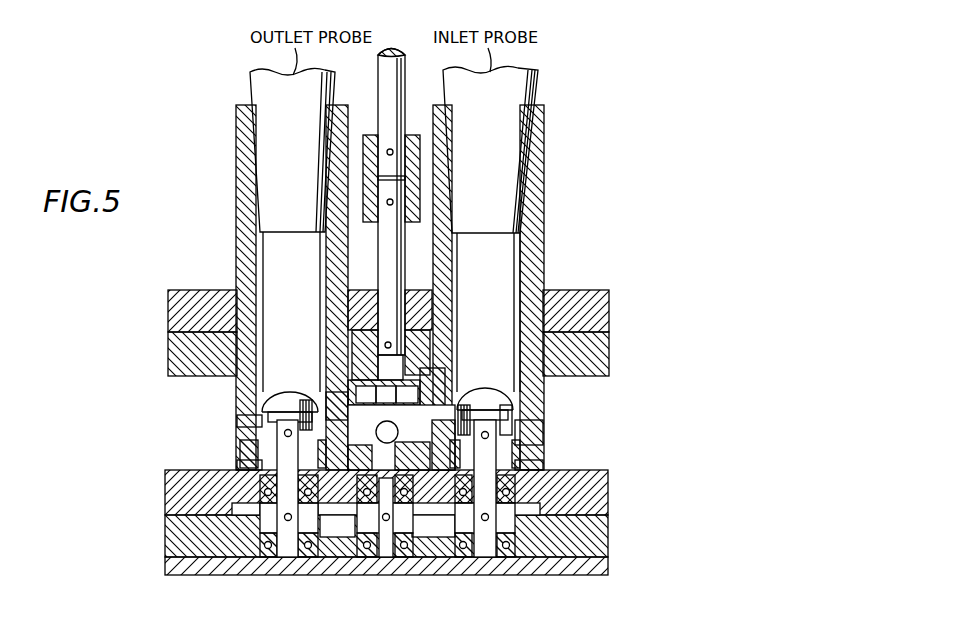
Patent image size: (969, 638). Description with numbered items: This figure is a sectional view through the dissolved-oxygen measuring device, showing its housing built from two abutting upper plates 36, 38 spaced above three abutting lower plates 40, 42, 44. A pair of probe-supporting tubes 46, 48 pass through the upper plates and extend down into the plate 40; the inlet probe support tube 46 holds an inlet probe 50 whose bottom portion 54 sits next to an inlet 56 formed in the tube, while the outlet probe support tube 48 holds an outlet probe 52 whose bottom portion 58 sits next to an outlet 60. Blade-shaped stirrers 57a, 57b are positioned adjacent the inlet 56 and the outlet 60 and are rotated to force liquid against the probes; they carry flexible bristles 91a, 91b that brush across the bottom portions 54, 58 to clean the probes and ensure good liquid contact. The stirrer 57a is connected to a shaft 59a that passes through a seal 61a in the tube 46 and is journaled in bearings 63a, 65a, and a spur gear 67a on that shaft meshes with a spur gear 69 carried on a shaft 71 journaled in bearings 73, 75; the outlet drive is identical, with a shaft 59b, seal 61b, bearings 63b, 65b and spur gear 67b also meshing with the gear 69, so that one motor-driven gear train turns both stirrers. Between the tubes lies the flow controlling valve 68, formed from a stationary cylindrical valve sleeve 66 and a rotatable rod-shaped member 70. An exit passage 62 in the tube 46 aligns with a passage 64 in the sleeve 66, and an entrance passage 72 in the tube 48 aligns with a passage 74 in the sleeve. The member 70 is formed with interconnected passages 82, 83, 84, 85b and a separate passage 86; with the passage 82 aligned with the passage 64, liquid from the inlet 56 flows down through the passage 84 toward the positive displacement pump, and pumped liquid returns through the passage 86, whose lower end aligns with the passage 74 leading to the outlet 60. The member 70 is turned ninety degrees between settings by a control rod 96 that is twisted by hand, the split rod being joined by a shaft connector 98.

The upper plate 36 is at (610, 318).
The upper plate 38 is at (610, 357).
The lower plate 40 is at (612, 486).
The lower plate 42 is at (612, 532).
The lower plate 44 is at (612, 567).
The inlet probe support tube 46 is at (535, 212).
The outlet probe support tube 48 is at (248, 205).
The inlet probe 50 is at (512, 136).
The outlet probe 52 is at (262, 120).
The bottom portion of inlet probe 54 is at (520, 388).
The inlet 56 is at (530, 426).
The stirrer 57a is at (527, 446).
The stirrer 57b is at (248, 447).
The bottom portion of outlet probe 58 is at (262, 384).
The shaft 59a is at (485, 557).
The shaft 59b is at (278, 557).
The outlet 60 is at (240, 428).
The seal 61a is at (540, 470).
The seal 61b is at (250, 471).
The exit passage 62 is at (466, 398).
The bearing 63a is at (540, 514).
The bearing 63b is at (245, 557).
The passage 64 is at (407, 395).
The bearing 65a is at (530, 557).
The bearing 65b is at (268, 557).
The cylindrical valve sleeve 66 is at (442, 390).
The spur gear 67a is at (445, 557).
The spur gear 67b is at (250, 512).
The flow controlling valve 68 is at (342, 378).
The spur gear 69 is at (430, 557).
The rod-shaped valve member 70 is at (368, 395).
The shaft 71 is at (385, 557).
The entrance passage 72 is at (330, 392).
The bearing 73 is at (340, 557).
The passage 74 is at (348, 345).
The bearing 75 is at (381, 445).
The passage 82 is at (432, 557).
The passage 83 is at (386, 395).
The passage 84 is at (452, 458).
The passage 85b is at (338, 557).
The passage 86 is at (322, 457).
The flexible bristles 91a is at (525, 414).
The flexible bristles 91b is at (300, 396).
The control rod 96 is at (401, 50).
The shaft connector 98 is at (372, 135).